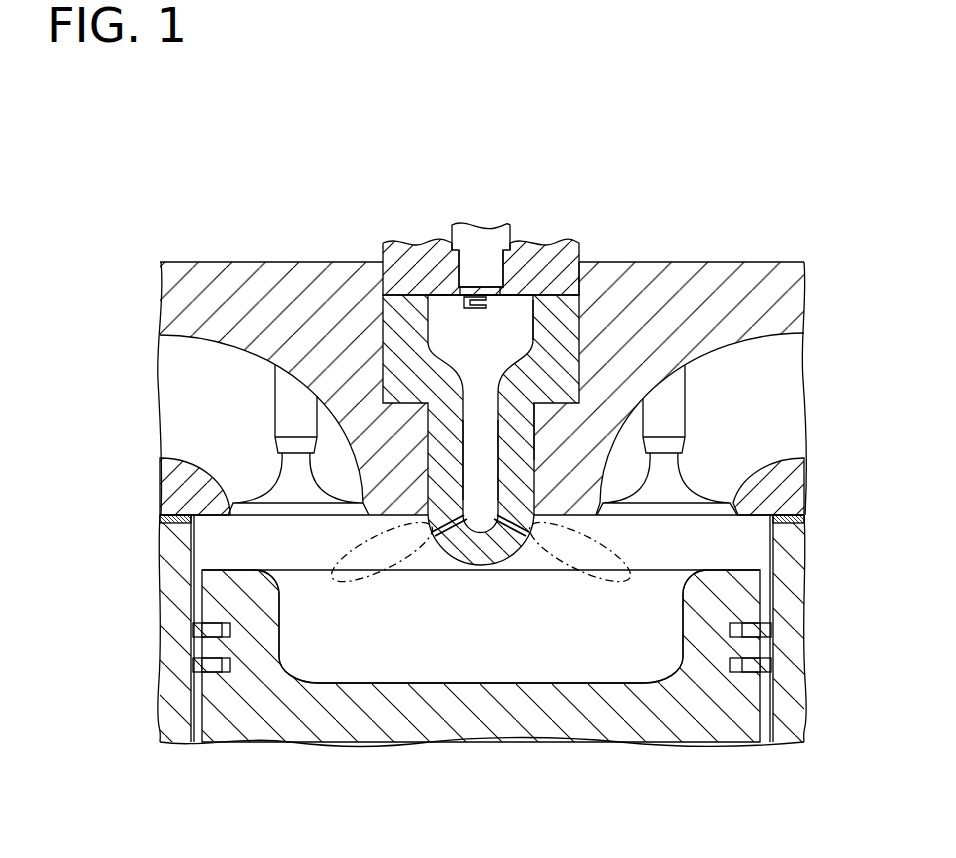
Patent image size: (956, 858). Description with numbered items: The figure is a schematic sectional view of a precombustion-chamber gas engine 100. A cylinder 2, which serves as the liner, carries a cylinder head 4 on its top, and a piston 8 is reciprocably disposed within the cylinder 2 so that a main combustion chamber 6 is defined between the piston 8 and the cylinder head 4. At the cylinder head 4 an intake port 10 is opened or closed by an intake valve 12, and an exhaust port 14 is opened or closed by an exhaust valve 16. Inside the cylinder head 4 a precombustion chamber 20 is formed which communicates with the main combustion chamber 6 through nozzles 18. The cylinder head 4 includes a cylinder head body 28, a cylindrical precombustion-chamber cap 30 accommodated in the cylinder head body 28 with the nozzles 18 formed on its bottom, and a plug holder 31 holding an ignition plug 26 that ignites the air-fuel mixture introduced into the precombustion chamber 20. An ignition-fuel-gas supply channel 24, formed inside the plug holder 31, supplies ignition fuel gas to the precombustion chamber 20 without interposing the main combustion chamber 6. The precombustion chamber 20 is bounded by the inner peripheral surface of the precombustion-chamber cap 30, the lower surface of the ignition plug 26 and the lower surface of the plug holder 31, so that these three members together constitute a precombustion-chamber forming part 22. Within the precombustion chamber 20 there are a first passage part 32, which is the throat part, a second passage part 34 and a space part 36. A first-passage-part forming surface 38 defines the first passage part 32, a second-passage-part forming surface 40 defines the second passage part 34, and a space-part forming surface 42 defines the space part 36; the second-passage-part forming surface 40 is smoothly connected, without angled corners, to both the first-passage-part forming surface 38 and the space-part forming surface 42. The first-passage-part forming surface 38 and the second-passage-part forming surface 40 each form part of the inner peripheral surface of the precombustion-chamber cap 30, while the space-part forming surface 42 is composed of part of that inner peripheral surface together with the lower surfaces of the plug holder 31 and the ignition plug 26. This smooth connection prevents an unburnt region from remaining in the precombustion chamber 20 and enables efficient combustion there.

The precombustion-chamber gas engine 100 is at (207, 116).
The cylinder 2 is at (178, 633).
The cylinder head 4 is at (172, 298).
The main combustion chamber 6 is at (468, 659).
The piston 8 is at (268, 744).
The intake port 10 is at (172, 405).
The intake valve 12 is at (272, 481).
The exhaust port 14 is at (790, 413).
The exhaust valve 16 is at (690, 478).
The nozzles 18 is at (540, 530).
The precombustion chamber 20 is at (462, 347).
The precombustion-chamber forming part 22 is at (515, 360).
The ignition-fuel-gas supply channel 24 is at (447, 319).
The ignition plug 26 is at (474, 236).
The cylinder head body 28 is at (236, 276).
The precombustion-chamber cap 30 is at (580, 264).
The plug holder 31 is at (384, 253).
The first passage part 32 is at (470, 440).
The second passage part 34 is at (384, 365).
The space part 36 is at (413, 327).
The first-passage-part forming surface 38 is at (492, 443).
The second-passage-part forming surface 40 is at (498, 377).
The space-part forming surface 42 is at (523, 337).